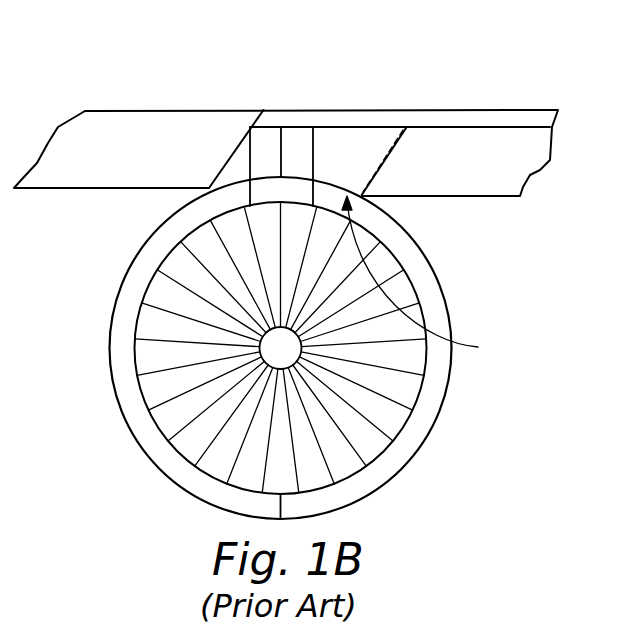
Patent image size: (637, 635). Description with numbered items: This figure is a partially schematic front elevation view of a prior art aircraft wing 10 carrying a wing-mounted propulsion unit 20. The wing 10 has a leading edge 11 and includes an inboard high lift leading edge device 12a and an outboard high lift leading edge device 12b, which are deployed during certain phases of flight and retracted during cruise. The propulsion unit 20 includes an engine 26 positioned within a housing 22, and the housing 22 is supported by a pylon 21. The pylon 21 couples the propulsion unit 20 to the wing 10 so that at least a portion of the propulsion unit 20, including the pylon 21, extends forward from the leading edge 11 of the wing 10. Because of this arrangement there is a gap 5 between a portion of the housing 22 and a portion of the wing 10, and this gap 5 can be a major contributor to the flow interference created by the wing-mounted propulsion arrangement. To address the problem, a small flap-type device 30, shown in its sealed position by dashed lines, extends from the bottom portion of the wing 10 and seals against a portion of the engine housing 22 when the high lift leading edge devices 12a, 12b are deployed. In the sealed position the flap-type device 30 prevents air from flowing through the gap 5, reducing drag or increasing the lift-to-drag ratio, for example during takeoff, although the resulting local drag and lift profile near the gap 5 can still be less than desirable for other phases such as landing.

The gap 5 is at (418, 279).
The aircraft wing 10 is at (513, 108).
The leading edge 11 is at (350, 118).
The inboard high lift leading edge device 12a is at (422, 147).
The outboard high lift leading edge device 12b is at (157, 120).
The wing-mounted propulsion unit 20 is at (284, 361).
The pylon 21 is at (272, 142).
The housing 22 is at (108, 322).
The engine 26 is at (342, 455).
The flap-type device 30 is at (360, 145).